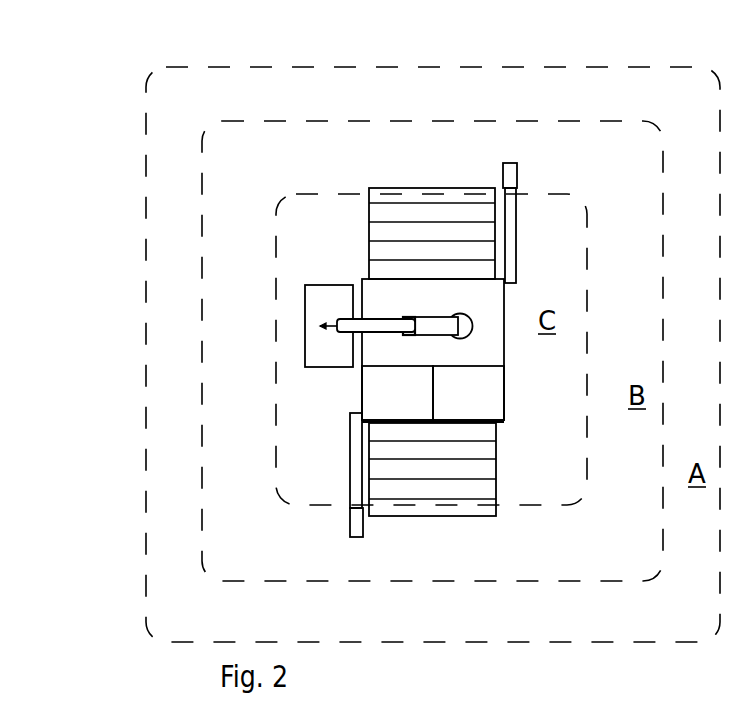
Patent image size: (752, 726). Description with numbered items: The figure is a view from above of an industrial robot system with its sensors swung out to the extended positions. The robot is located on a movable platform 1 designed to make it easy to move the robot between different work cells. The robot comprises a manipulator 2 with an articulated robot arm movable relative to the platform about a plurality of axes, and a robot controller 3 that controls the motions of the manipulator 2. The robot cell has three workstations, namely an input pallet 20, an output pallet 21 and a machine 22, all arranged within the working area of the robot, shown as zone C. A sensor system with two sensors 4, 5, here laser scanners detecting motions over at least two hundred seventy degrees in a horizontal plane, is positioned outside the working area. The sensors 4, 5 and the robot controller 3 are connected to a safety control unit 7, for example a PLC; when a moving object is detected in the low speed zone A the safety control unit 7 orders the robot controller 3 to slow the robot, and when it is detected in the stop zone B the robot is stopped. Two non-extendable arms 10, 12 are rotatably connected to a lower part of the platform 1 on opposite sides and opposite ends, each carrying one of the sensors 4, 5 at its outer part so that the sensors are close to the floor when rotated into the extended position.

The platform 1 is at (433, 345).
The manipulator 2 is at (429, 317).
The robot controller 3 is at (390, 400).
The sensor 4 is at (357, 525).
The sensor 5 is at (512, 170).
The safety control unit 7 is at (480, 400).
The arm 10 is at (357, 461).
The arm 12 is at (513, 253).
The input pallet 20 is at (427, 471).
The output pallet 21 is at (447, 232).
The machine 22 is at (323, 307).